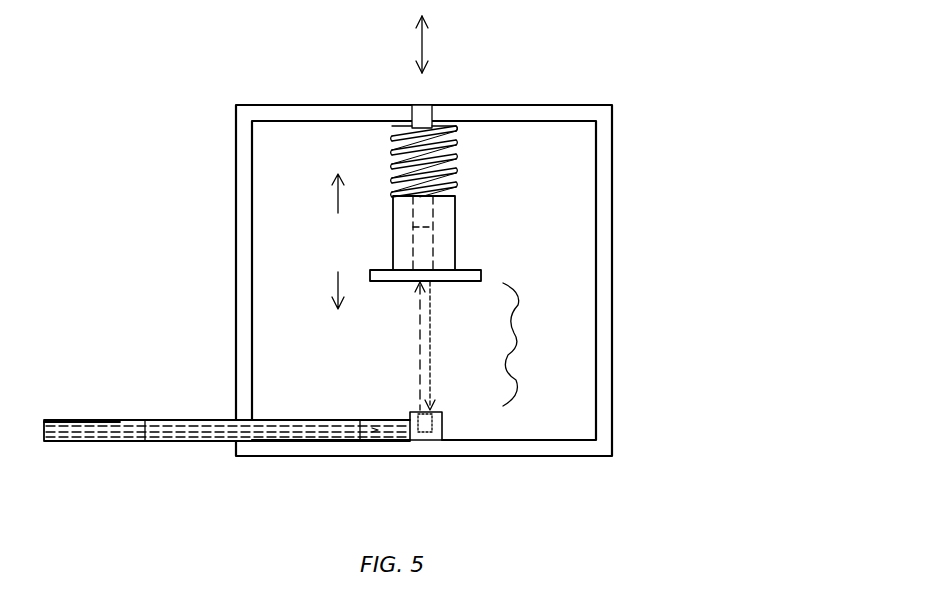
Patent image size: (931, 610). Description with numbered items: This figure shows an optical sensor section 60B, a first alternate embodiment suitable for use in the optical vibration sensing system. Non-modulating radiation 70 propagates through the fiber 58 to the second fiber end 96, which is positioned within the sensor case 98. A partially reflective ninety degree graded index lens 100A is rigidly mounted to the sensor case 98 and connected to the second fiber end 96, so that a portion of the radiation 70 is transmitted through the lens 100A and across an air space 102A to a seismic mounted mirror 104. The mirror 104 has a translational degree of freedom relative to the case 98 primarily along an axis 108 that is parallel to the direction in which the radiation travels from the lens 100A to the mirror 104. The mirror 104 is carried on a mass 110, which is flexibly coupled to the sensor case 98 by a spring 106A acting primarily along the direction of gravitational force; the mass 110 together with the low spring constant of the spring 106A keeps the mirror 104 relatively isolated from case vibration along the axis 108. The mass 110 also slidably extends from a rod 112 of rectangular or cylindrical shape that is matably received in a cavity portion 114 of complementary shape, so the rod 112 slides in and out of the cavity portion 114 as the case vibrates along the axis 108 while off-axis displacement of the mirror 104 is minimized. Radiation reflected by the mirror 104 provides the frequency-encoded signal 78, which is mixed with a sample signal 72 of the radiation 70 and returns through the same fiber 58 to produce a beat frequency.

The fiber 58 is at (205, 414).
The optical sensor section 60B is at (252, 102).
The non-modulating radiation 70 is at (418, 340).
The sample signal 72 is at (118, 422).
The frequency-encoded signal 78 is at (430, 365).
The second fiber end 96 is at (410, 415).
The sensor case 98 is at (612, 130).
The partially reflective 90 degree graded index (GRIN) lens 100A is at (442, 425).
The air space 102A is at (514, 340).
The seismic mounted mirror 104 is at (481, 273).
The spring 106A is at (388, 170).
The axis 108 is at (420, 44).
The mass 110 is at (455, 226).
The rod 112 is at (423, 118).
The cavity portion 114 is at (425, 240).